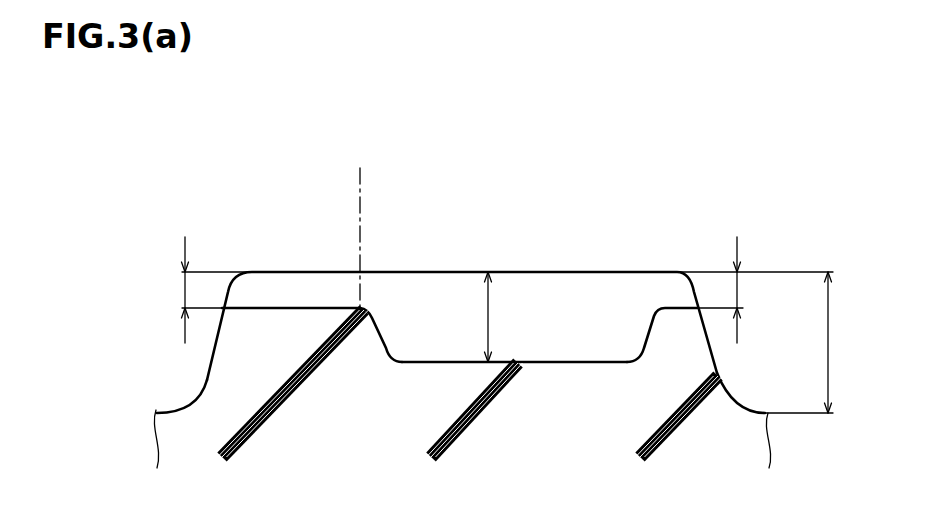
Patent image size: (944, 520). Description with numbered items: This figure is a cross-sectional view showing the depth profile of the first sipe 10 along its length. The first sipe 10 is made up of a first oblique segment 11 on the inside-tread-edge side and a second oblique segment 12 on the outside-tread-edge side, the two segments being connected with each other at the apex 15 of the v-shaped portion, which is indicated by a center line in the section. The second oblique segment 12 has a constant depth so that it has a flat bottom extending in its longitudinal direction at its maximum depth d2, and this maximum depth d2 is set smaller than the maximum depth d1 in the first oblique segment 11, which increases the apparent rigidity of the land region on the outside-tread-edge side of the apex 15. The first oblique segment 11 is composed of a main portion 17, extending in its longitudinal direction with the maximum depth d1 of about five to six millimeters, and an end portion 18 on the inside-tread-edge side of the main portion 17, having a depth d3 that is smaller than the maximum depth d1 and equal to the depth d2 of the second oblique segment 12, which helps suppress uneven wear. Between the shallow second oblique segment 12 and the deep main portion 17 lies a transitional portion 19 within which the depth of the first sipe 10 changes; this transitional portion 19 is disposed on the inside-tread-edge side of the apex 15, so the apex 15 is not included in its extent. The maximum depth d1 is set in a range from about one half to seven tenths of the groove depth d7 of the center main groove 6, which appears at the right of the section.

The center main groove 6 is at (742, 395).
The first sipe 10 is at (457, 270).
The first oblique segment 11 is at (549, 236).
The second oblique segment 12 is at (300, 295).
The apex 15 is at (360, 224).
The main portion 17 is at (550, 327).
The end portion 18 is at (670, 298).
The transitional portion 19 is at (385, 338).
The maximum depth in the first oblique segment d1 is at (488, 318).
The maximum depth in the second oblique segment d2 is at (165, 290).
The depth of the end portion d3 is at (756, 290).
The groove depth of the center main groove d7 is at (847, 342).